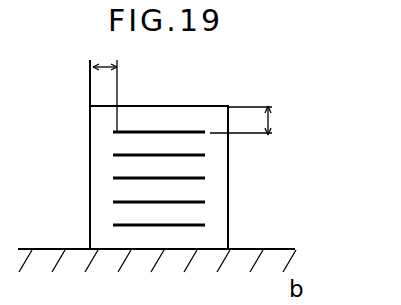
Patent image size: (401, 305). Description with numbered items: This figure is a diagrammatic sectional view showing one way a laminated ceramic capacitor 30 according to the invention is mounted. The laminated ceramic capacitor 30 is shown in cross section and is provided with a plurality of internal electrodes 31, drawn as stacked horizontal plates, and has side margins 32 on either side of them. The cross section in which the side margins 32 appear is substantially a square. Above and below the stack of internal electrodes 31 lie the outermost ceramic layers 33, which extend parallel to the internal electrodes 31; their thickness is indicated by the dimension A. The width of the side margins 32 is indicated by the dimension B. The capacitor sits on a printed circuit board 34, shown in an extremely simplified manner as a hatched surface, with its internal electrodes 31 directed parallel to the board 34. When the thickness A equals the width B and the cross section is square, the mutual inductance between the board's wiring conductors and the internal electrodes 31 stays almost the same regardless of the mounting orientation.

The laminated ceramic capacitor 30 is at (224, 102).
The internal electrodes 31 is at (123, 177).
The side margins 32 is at (100, 207).
The outermost ceramic layers 33 is at (163, 117).
The printed circuit board 34 is at (273, 249).
The thickness of outermost ceramic layers A is at (270, 121).
The width of side margins B is at (103, 64).